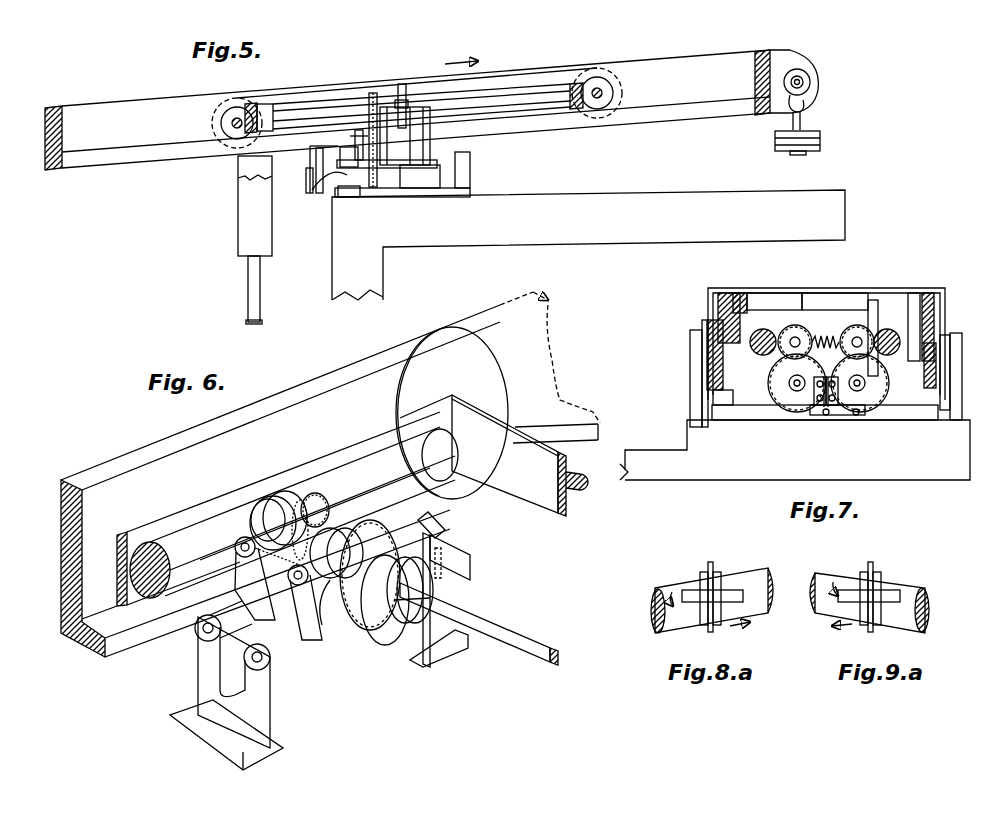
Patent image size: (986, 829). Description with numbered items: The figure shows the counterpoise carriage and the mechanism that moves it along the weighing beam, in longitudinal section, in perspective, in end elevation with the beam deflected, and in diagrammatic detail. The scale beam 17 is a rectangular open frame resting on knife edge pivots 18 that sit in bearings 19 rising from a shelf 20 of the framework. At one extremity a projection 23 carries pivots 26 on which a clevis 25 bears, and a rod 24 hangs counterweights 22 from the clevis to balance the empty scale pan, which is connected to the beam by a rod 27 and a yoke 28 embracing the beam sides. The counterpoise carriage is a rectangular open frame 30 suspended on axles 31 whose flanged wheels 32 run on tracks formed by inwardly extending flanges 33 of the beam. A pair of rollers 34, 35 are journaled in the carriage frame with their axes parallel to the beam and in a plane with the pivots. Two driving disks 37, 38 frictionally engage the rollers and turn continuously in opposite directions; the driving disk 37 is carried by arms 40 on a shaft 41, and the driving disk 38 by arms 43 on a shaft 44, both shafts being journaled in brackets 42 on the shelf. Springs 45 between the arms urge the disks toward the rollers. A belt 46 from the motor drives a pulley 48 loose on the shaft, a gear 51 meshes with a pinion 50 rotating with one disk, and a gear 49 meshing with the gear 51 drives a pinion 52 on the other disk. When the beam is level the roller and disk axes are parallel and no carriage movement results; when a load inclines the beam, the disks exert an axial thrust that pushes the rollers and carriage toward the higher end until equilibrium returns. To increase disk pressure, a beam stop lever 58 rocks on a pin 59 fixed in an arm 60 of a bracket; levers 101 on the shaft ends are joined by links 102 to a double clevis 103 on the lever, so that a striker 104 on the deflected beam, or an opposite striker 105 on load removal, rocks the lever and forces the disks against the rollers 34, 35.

In FIG. 5, the weighing or scale beam 17 is at (407, 110).
In FIG. 6, the weighing or scale beam 17 is at (330, 474).
In FIG. 7, the weighing or scale beam 17 is at (708, 297).
In FIG. 7, the pivots 18 is at (690, 338).
In FIG. 5, the bearings 19 is at (407, 190).
In FIG. 7, the bearings 19 is at (702, 360).
In FIG. 5, the shelf 20 is at (588, 245).
In FIG. 7, the shelf 20 is at (795, 450).
In FIG. 5, the counterweights 22 is at (821, 141).
In FIG. 5, the projection 23 is at (790, 58).
In FIG. 5, the rod 24 is at (803, 120).
In FIG. 5, the clevis 25 is at (806, 98).
In FIG. 5, the pivots 26 is at (800, 80).
In FIG. 5, the rod 27 is at (246, 285).
In FIG. 5, the yoke 28 is at (238, 203).
In FIG. 5, the rectangular open frame 30 is at (252, 103).
In FIG. 6, the rectangular open frame 30 is at (483, 455).
In FIG. 7, the rectangular open frame 30 is at (710, 322).
In FIG. 5, the axles 31 is at (233, 123).
In FIG. 6, the axles 31 is at (582, 476).
In FIG. 5, the flanged wheels 32 is at (225, 110).
In FIG. 6, the flanged wheels 32 is at (452, 413).
In FIG. 7, the flanged wheels 32 is at (718, 310).
In FIG. 5, the inwardly extending flanges 33 is at (152, 157).
In FIG. 6, the inwardly extending flanges 33 is at (540, 442).
In FIG. 7, the inwardly extending flanges 33 is at (712, 410).
In FIG. 5, the roller 34 is at (333, 105).
In FIG. 7, the roller 34 is at (760, 328).
In FIG. 8a, the roller 34 is at (680, 586).
In FIG. 9a, the roller 34 is at (895, 590).
In FIG. 6, the roller 35 is at (360, 452).
In FIG. 7, the roller 35 is at (916, 293).
In FIG. 6, the driving disk 37 is at (333, 553).
In FIG. 7, the driving disk 37 is at (790, 326).
In FIG. 8a, the driving disk 37 is at (712, 565).
In FIG. 9a, the driving disk 37 is at (873, 568).
In FIG. 5, the driving disk 38 is at (401, 84).
In FIG. 6, the driving disk 38 is at (268, 497).
In FIG. 7, the driving disk 38 is at (860, 324).
In FIG. 6, the arms 40 is at (320, 610).
In FIG. 7, the arms 40 is at (705, 373).
In FIG. 6, the shaft 41 is at (244, 658).
In FIG. 7, the shaft 41 is at (789, 385).
In FIG. 5, the brackets 42 is at (450, 155).
In FIG. 6, the brackets 42 is at (460, 658).
In FIG. 7, the brackets 42 is at (848, 416).
In FIG. 5, the arms 43 is at (408, 135).
In FIG. 6, the arms 43 is at (290, 520).
In FIG. 7, the arms 43 is at (855, 357).
In FIG. 5, the shaft 44 is at (420, 176).
In FIG. 6, the shaft 44 is at (195, 632).
In FIG. 7, the shaft 44 is at (865, 385).
In FIG. 6, the springs 45 is at (322, 497).
In FIG. 7, the springs 45 is at (828, 336).
In FIG. 5, the belt 46 is at (357, 138).
In FIG. 6, the belt 46 is at (422, 640).
In FIG. 5, the pulley 48 is at (362, 150).
In FIG. 6, the pulley 48 is at (425, 600).
In FIG. 7, the pulley 48 is at (778, 372).
In FIG. 5, the gear 49 is at (372, 178).
In FIG. 7, the gear 49 is at (880, 400).
In FIG. 6, the pinion 50 is at (365, 520).
In FIG. 7, the pinion 50 is at (800, 326).
In FIG. 6, the gear 51 is at (380, 625).
In FIG. 7, the gear 51 is at (770, 400).
In FIG. 5, the pinion 52 is at (373, 92).
In FIG. 6, the pinion 52 is at (304, 500).
In FIG. 7, the pinion 52 is at (875, 300).
In FIG. 5, the lever 58 is at (308, 192).
In FIG. 6, the lever 58 is at (478, 612).
In FIG. 5, the pin 59 is at (318, 170).
In FIG. 7, the pin 59 is at (830, 415).
In FIG. 5, the arm 60 is at (330, 183).
In FIG. 7, the arm 60 is at (858, 416).
In FIG. 5, the levers 101 is at (314, 156).
In FIG. 6, the levers 101 is at (455, 548).
In FIG. 7, the levers 101 is at (812, 380).
In FIG. 5, the links 102 is at (312, 170).
In FIG. 6, the links 102 is at (430, 520).
In FIG. 7, the links 102 is at (822, 405).
In FIG. 5, the double clevis 103 is at (310, 184).
In FIG. 6, the double clevis 103 is at (445, 570).
In FIG. 7, the double clevis 103 is at (826, 408).
In FIG. 7, the striker 104 is at (962, 410).
In FIG. 7, the striker 105 is at (713, 396).